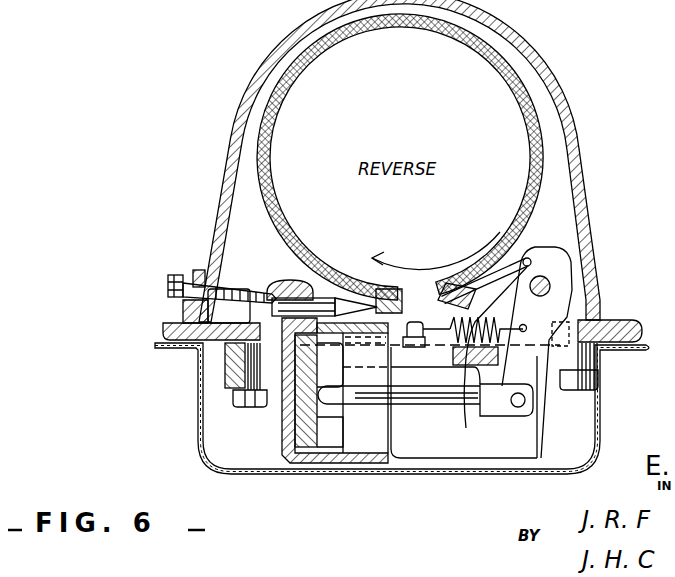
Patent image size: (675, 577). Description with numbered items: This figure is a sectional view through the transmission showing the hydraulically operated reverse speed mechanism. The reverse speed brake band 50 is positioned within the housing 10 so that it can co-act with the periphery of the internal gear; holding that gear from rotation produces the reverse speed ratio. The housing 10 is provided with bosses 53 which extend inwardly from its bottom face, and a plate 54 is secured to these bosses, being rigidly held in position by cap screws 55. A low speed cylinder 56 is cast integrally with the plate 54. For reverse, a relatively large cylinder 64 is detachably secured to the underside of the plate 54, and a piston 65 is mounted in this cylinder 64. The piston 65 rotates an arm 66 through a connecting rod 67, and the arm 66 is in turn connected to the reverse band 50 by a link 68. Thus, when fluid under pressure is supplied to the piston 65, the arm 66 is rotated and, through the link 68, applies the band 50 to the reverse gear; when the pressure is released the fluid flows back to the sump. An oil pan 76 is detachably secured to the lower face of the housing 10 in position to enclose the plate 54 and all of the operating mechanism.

The housing 10 is at (230, 126).
The reverse speed brake band 50 is at (272, 166).
The bosses 53 is at (588, 322).
The plate 54 is at (173, 373).
The cap screws 55 is at (577, 385).
The low speed cylinder 56 is at (506, 419).
The reverse speed cylinder 64 is at (346, 395).
The piston 65 is at (298, 412).
The arm 66 is at (537, 352).
The connecting rod 67 is at (428, 392).
The link 68 is at (478, 272).
The oil pan 76 is at (331, 475).